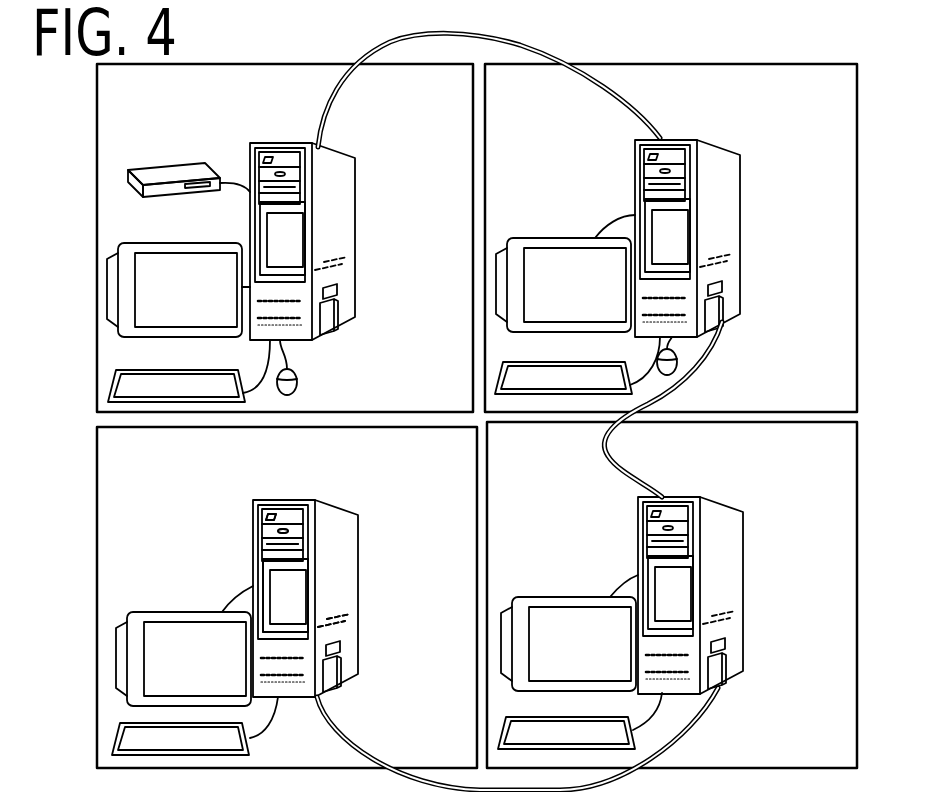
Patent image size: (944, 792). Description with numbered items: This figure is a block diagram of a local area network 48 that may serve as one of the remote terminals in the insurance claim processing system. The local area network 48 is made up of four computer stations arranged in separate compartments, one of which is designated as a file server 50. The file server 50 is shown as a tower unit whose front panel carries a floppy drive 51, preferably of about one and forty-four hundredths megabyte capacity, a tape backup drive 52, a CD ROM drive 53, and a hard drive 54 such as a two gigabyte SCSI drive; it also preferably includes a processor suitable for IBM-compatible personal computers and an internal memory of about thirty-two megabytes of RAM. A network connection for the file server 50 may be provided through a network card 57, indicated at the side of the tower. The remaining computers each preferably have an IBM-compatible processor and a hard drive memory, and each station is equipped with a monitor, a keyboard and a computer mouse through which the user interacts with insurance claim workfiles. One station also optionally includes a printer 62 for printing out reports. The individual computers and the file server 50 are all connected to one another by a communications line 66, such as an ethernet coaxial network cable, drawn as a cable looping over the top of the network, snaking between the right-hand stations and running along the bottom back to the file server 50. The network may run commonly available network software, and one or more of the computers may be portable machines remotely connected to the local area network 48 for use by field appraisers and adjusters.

The local area network 48 is at (708, 50).
The file server 50 is at (335, 514).
The floppy drive 51 is at (310, 533).
The tape backup drive 52 is at (315, 546).
The CD ROM drive 53 is at (296, 500).
The hard drive 54 is at (315, 561).
The network card 57 is at (362, 615).
The printer 62 is at (192, 164).
The communications line 66 is at (604, 780).